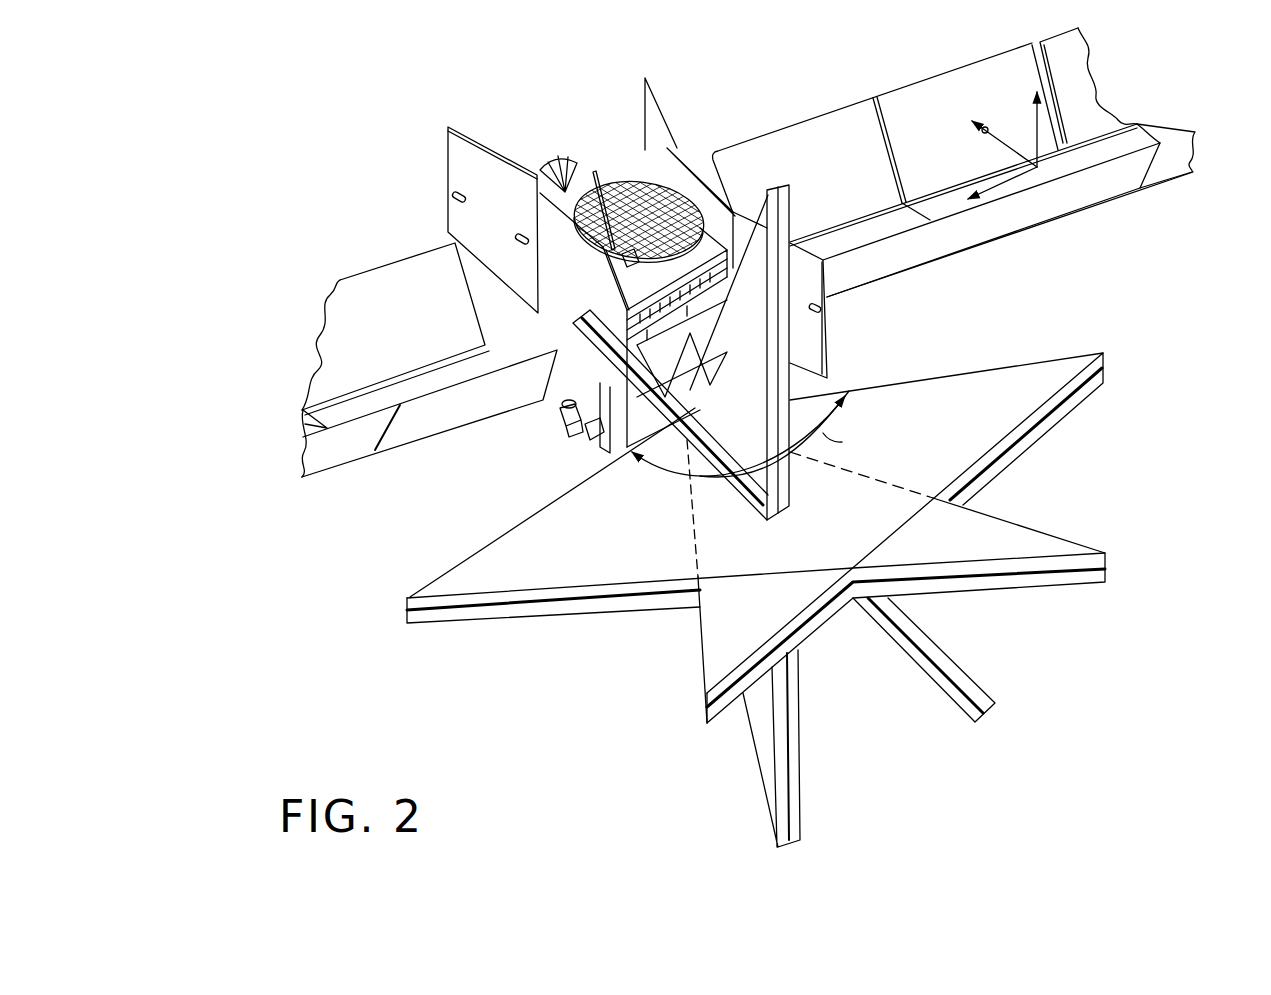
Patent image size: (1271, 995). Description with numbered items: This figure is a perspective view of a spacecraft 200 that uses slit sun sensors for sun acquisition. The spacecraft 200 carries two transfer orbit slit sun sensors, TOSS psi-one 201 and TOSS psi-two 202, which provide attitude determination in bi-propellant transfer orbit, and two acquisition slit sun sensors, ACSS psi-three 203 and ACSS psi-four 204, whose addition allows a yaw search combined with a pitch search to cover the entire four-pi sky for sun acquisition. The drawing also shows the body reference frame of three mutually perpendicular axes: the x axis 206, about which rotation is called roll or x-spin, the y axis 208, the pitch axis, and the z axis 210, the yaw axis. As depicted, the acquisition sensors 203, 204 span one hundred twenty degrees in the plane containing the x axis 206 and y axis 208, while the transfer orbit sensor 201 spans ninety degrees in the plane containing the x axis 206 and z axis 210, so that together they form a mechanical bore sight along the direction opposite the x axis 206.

The spacecraft 200 is at (366, 108).
The transfer orbit slit sun sensor Ψ1 201 is at (820, 823).
The transfer orbit slit sun sensor Ψ2 202 is at (1020, 747).
The acquisition slit sun sensor Ψ3 203 is at (381, 632).
The acquisition slit sun sensor Ψ4 204 is at (1115, 341).
The x axis 206 is at (1013, 147).
The y axis 208 is at (1001, 198).
The z axis 210 is at (1040, 143).